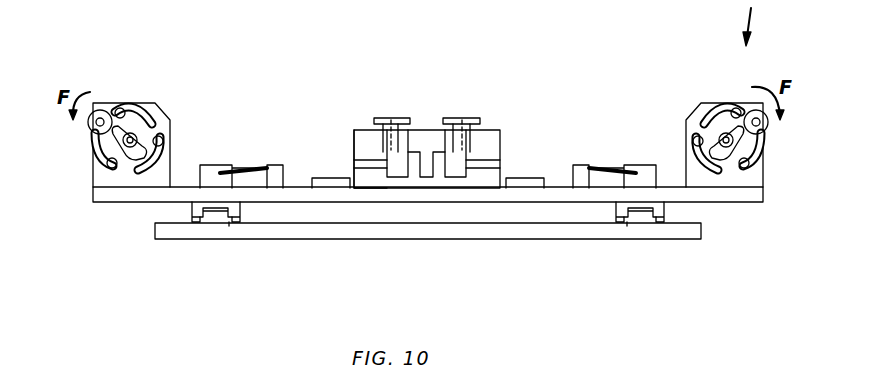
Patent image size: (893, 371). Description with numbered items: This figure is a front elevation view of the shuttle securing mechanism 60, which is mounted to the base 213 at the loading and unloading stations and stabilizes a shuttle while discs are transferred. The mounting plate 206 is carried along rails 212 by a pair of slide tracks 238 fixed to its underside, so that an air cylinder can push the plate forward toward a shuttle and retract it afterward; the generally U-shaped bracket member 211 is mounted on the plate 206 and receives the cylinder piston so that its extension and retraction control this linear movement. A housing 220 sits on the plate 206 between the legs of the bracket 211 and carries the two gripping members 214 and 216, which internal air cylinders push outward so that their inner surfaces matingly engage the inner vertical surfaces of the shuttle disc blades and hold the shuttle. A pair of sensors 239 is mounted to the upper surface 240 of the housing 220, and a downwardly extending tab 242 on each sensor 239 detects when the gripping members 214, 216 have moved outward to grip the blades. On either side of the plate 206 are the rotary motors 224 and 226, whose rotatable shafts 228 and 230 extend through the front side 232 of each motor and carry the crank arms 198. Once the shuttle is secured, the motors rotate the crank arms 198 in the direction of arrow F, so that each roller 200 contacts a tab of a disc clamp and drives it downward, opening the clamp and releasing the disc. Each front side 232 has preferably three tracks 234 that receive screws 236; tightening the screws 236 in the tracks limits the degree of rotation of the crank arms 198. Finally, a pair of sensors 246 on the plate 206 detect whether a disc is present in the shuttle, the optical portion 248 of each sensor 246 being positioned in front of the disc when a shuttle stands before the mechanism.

The shuttle securing mechanism 60 is at (751, 8).
The crank arm 198 is at (98, 158).
The roller 200 is at (93, 127).
The mounting plate 206 is at (762, 197).
The bracket member 211 is at (515, 183).
The rail 212 is at (200, 218).
The base 213 is at (224, 274).
The gripping member 214 is at (445, 133).
The gripping member 216 is at (410, 130).
The housing 220 is at (492, 148).
The rotary motor 224 is at (725, 128).
The rotary motor 226 is at (101, 110).
The rotatable shaft 228 is at (722, 128).
The rotatable shaft 230 is at (133, 135).
The front side 232 is at (105, 185).
The track 234 is at (695, 135).
The screw 236 is at (121, 108).
The slide track 238 is at (230, 228).
The sensor 239 is at (392, 117).
The upper surface 240 is at (360, 123).
The downwardly extending tab 242 is at (382, 137).
The sensor 246 is at (203, 166).
The optical portion 248 is at (277, 184).